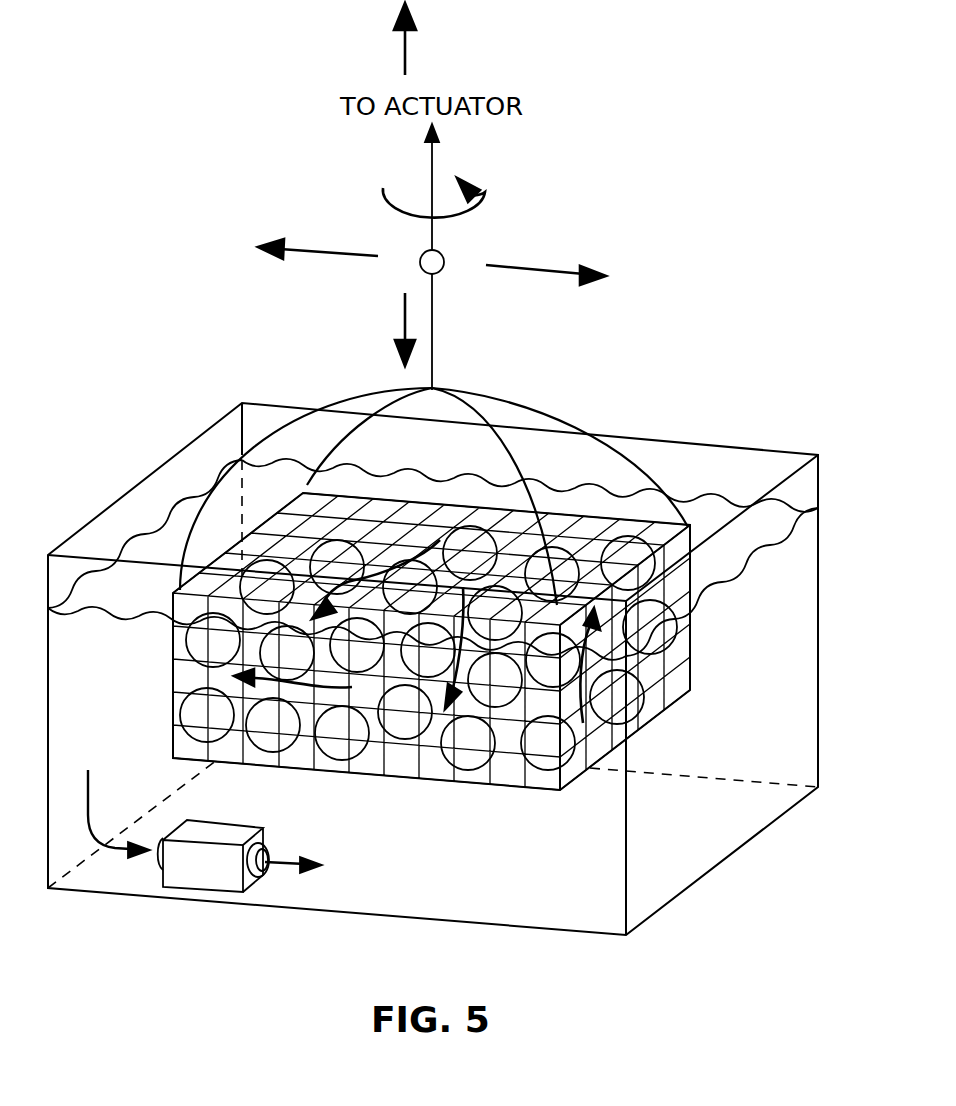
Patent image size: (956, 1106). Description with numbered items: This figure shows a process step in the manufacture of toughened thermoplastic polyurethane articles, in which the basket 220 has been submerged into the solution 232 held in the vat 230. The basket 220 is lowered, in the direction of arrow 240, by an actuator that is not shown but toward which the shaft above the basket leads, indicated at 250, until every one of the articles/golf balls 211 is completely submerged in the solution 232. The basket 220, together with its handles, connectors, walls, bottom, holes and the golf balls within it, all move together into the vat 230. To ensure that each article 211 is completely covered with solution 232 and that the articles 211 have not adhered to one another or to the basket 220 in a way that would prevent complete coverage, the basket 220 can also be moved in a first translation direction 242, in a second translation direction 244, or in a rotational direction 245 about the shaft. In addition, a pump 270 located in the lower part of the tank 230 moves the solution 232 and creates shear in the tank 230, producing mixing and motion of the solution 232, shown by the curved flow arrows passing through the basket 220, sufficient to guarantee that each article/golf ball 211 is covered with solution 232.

The articles/golf balls 211 is at (472, 762).
The basket 220 is at (550, 396).
The vat 230 is at (773, 452).
The solution 232 is at (698, 517).
The arrow 240 is at (400, 318).
The first translation direction 242 is at (337, 251).
The second translation direction 244 is at (530, 273).
The rotational direction 245 is at (468, 217).
The connection to actuator 250 is at (403, 45).
The pump 270 is at (197, 870).